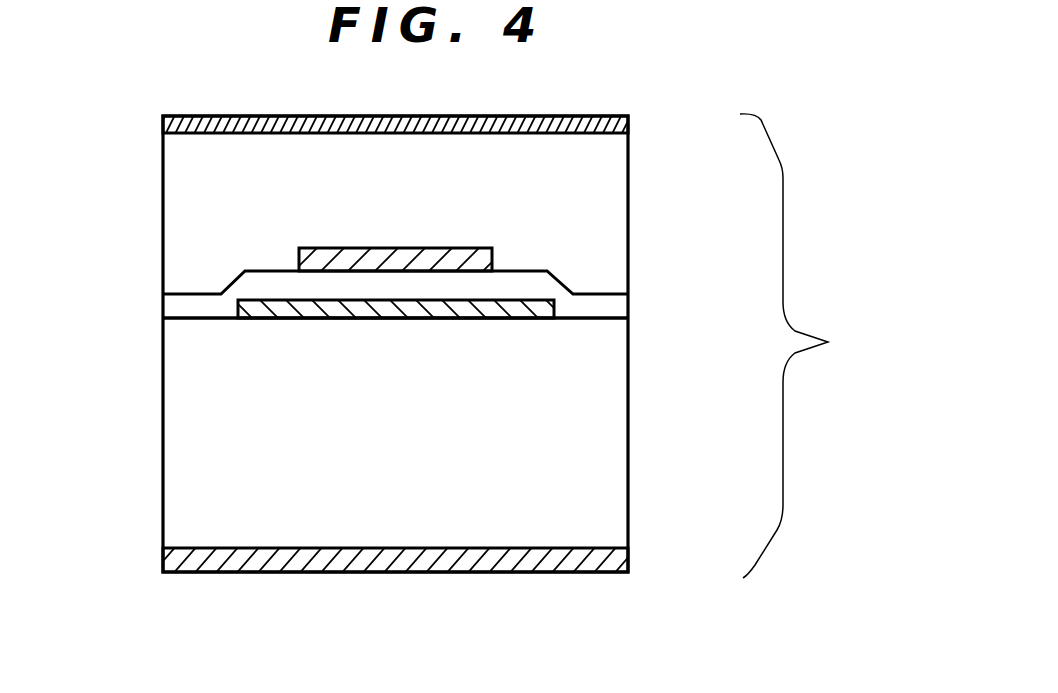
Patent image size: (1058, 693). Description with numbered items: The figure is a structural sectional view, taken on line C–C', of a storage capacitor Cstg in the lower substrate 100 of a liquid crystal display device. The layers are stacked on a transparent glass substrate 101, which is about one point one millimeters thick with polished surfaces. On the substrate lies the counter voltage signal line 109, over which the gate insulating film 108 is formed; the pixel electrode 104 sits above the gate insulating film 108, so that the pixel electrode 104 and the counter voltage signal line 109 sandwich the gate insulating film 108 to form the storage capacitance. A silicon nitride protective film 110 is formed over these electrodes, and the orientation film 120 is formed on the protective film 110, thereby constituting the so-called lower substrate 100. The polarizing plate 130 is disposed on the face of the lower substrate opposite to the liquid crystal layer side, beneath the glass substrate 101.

The electro-optical device 100 is at (818, 346).
The transparent glass substrate 101 is at (621, 411).
The pixel electrode 104 is at (378, 248).
The gate insulating film 108 is at (607, 318).
The counter voltage signal line 109 is at (392, 322).
The protective film 110 is at (628, 185).
The orientation film 120 is at (628, 125).
The polarizing plate 130 is at (628, 557).